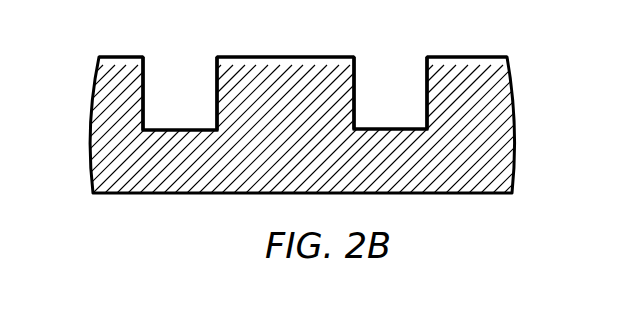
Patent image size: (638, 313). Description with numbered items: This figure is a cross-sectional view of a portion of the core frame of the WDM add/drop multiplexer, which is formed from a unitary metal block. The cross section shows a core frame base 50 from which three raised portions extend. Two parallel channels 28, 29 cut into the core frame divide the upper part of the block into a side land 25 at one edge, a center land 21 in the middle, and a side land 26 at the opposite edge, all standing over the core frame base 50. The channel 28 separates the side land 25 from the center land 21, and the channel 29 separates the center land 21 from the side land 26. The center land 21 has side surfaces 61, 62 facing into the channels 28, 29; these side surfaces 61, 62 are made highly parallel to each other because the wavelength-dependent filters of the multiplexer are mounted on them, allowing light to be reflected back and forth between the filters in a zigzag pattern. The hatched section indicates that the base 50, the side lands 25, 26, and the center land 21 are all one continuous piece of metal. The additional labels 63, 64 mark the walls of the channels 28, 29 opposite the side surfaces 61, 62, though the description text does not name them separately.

The core frame base 50 is at (373, 175).
The center land 21 is at (275, 80).
The side land 25 is at (110, 67).
The side land 26 is at (482, 72).
The channel 28 is at (179, 73).
The channel 29 is at (389, 74).
The side surface 61 is at (217, 100).
The first trench left sidewall 63 is at (147, 68).
The side surface 62 is at (357, 70).
The second trench right sidewall 64 is at (427, 100).